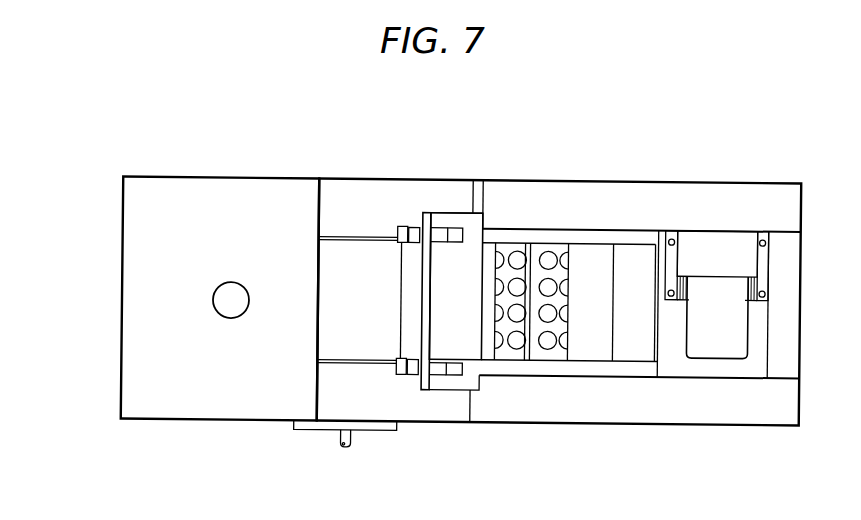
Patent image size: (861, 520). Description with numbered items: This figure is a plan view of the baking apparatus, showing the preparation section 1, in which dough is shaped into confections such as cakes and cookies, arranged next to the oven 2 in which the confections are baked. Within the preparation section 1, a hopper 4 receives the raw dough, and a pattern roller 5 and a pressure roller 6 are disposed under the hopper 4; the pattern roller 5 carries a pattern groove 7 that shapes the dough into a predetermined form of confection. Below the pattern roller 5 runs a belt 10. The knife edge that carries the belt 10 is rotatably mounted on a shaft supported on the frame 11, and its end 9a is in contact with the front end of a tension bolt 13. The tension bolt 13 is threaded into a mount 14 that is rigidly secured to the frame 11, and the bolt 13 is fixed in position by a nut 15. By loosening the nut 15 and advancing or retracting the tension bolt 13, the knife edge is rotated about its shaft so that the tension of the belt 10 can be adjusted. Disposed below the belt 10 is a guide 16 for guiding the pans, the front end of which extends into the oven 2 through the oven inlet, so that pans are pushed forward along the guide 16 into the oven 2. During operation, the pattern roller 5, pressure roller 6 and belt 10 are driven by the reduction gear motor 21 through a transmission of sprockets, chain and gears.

The preparation section 1 is at (597, 217).
The oven 2 is at (247, 175).
The hopper 4 is at (638, 352).
The pattern roller 5 is at (507, 356).
The pressure roller 6 is at (590, 352).
The pattern groove 7 is at (546, 345).
The end of the knife edge 9a is at (458, 372).
The belt 10 is at (458, 250).
The frame 11 is at (502, 231).
The tension bolt 13 is at (398, 376).
The mount 14 is at (426, 212).
The nut 15 is at (415, 376).
The guide 16 is at (355, 236).
The reduction gear motor 21 is at (720, 346).